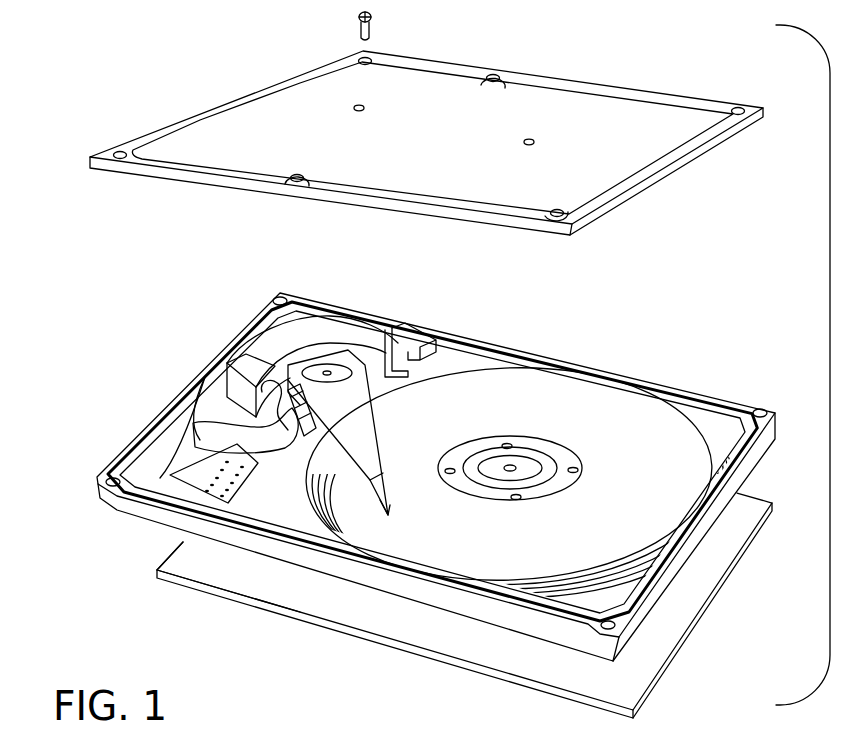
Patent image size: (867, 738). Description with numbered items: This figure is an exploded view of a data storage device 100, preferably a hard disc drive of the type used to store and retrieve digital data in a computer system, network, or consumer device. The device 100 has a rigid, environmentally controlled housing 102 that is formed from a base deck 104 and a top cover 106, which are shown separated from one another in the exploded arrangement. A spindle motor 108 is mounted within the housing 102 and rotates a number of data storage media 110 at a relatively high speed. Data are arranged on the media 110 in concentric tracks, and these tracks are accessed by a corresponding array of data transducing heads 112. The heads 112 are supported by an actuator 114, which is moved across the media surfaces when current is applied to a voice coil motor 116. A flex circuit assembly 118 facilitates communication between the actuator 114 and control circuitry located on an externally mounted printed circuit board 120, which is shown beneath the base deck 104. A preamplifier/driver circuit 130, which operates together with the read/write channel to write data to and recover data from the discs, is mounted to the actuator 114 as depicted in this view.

The data storage device 100 is at (153, 65).
The housing 102 is at (143, 293).
The base deck 104 is at (687, 558).
The top cover 106 is at (525, 97).
The spindle motor 108 is at (512, 462).
The data storage media 110 is at (537, 587).
The data transducing heads 112 is at (392, 516).
The actuator 114 is at (362, 440).
The voice coil motor 116 is at (307, 333).
The flex circuit assembly 118 is at (220, 430).
The printed circuit board 120 is at (250, 600).
The preamplifier/driver circuit 130 is at (293, 427).